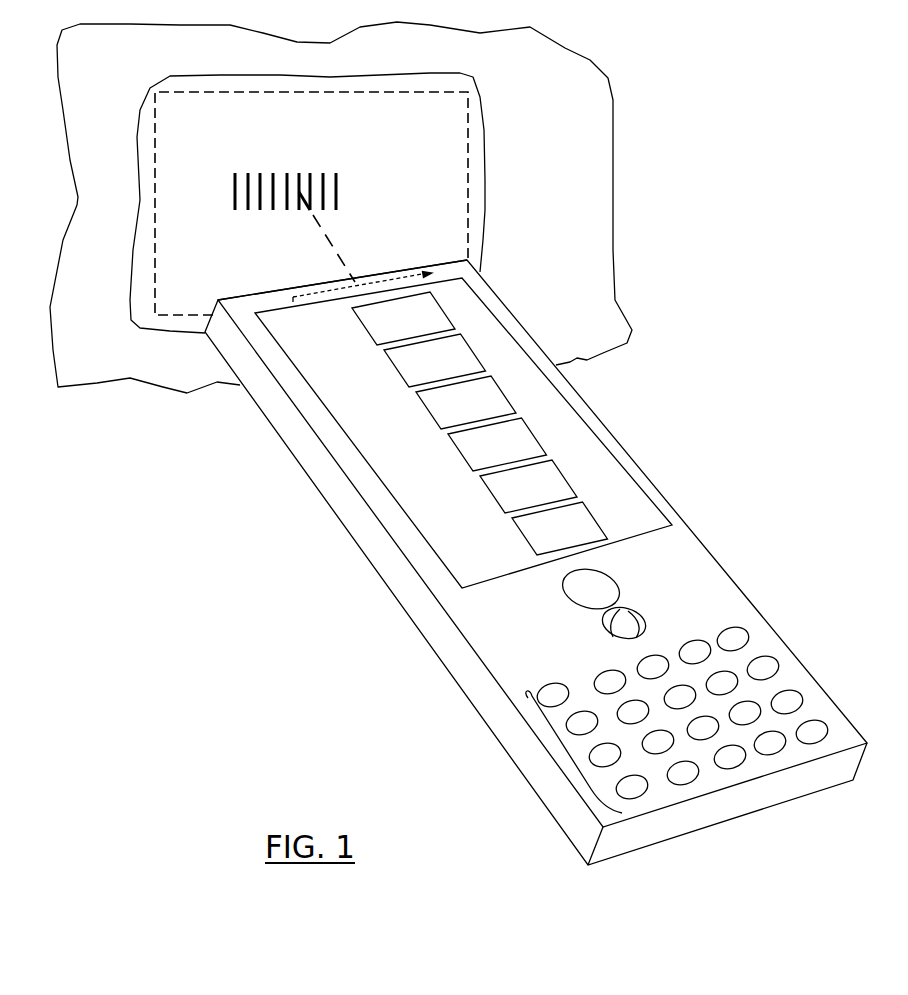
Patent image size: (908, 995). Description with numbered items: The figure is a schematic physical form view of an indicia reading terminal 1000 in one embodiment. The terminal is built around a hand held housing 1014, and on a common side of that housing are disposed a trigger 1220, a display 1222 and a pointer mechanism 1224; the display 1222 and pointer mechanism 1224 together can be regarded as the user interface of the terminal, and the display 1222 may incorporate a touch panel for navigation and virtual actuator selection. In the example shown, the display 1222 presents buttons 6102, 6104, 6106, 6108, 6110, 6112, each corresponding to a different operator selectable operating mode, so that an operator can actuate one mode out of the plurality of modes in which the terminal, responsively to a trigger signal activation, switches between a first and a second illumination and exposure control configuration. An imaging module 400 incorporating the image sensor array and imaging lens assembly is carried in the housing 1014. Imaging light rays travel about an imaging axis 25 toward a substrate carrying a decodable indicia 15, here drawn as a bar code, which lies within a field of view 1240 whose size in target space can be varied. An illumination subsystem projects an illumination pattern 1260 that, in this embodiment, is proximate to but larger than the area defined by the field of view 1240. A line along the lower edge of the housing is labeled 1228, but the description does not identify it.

The decodable indicia 15 is at (336, 192).
The imaging axis 25 is at (332, 243).
The imaging module 400 is at (469, 262).
The indicia reading terminal 1000 is at (657, 321).
The hand held housing 1014 is at (770, 647).
The trigger 1220 is at (617, 580).
The display 1222 is at (676, 522).
The pointer mechanism 1224 is at (642, 618).
The housing edge 1228 is at (576, 748).
The field of view 1240 is at (470, 178).
The illumination pattern 1260 is at (487, 136).
The button 6102 is at (455, 310).
The button 6104 is at (478, 352).
The button 6106 is at (512, 394).
The button 6108 is at (535, 442).
The button 6110 is at (568, 478).
The button 6112 is at (590, 508).